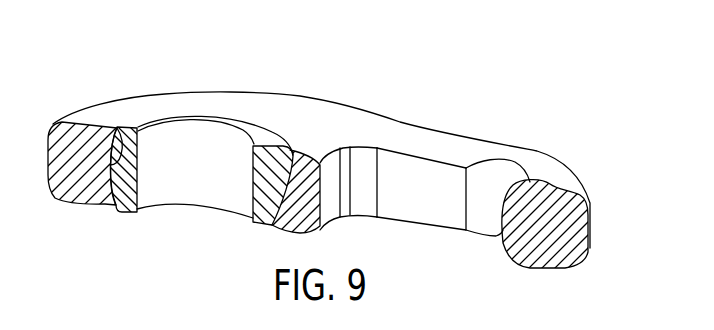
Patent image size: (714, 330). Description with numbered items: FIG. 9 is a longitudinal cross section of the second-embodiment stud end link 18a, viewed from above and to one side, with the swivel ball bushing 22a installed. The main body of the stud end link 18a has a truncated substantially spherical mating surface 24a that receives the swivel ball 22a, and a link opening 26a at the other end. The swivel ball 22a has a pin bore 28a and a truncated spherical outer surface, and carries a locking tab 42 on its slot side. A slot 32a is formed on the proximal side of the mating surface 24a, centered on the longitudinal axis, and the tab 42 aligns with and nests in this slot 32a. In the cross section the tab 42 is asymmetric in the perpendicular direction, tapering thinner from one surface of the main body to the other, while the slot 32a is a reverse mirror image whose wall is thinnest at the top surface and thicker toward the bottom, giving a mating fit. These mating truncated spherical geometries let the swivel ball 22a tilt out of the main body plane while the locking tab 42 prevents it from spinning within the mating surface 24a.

The stud end link 18a is at (476, 94).
The swivel ball bushing 22a is at (112, 221).
The truncated substantially spherical mating surface 24a is at (117, 128).
The link opening 26a is at (438, 210).
The pin bore 28a is at (212, 178).
The slot 32a is at (254, 221).
The locking tab 42 is at (272, 150).